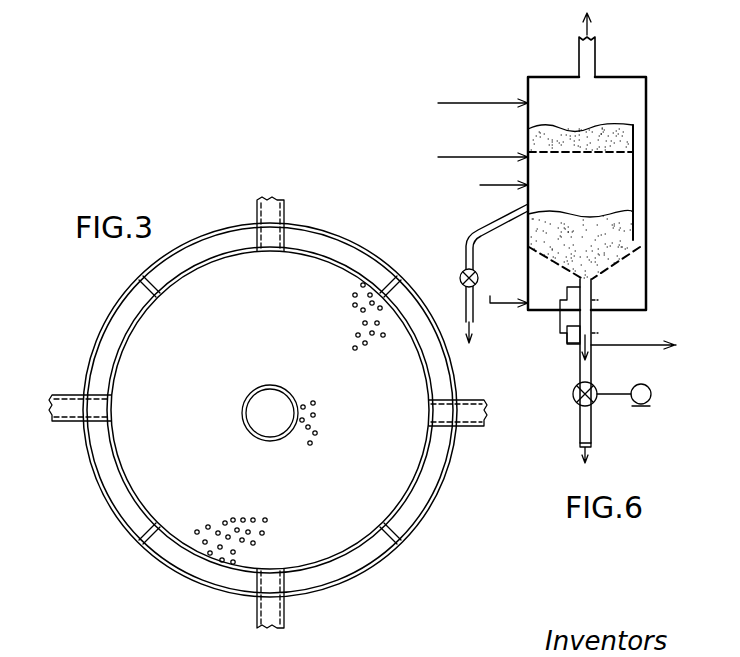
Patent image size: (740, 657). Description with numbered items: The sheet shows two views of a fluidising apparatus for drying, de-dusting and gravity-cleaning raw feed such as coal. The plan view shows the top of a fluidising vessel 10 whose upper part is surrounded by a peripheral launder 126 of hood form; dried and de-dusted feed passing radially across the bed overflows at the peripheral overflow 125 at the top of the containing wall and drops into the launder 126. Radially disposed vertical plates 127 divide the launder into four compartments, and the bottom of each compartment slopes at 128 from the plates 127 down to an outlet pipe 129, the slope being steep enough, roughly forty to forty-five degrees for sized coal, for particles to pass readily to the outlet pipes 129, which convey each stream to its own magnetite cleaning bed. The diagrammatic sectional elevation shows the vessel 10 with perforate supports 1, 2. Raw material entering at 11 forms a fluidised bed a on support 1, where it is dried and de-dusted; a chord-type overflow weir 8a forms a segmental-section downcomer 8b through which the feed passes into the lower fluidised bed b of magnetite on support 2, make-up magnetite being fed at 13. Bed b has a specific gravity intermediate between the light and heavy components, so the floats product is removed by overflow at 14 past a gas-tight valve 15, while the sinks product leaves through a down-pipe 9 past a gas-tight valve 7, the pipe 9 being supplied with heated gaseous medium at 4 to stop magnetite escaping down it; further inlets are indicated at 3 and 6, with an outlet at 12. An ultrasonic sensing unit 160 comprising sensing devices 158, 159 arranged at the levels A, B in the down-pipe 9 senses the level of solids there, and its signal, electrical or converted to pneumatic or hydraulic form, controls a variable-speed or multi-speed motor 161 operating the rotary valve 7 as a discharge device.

In FIG. 3, the perforate support 1 is at (360, 449).
In FIG. 6, the perforate support 1 is at (590, 156).
In FIG. 6, the perforate support 2 is at (623, 256).
In FIG. 6, the inlet 3 is at (509, 290).
In FIG. 6, the heated gaseous medium supply 4 is at (668, 345).
In FIG. 6, the inlet 6 is at (500, 157).
In FIG. 6, the gas-tight valve 7 is at (598, 385).
In FIG. 6, the chord-type overflow weir 8a is at (638, 137).
In FIG. 6, the segmental-section downcomer 8b is at (638, 176).
In FIG. 6, the down-pipe 9 is at (598, 282).
In FIG. 6, the fluidising vessel 10 is at (648, 97).
In FIG. 6, the raw material inlet 11 is at (478, 102).
In FIG. 6, the outlet pipe 12 is at (598, 48).
In FIG. 6, the discrete solid particle feed 13 is at (490, 188).
In FIG. 6, the floats overflow 14 is at (520, 215).
In FIG. 6, the gas-tight valve 15 is at (478, 272).
In FIG. 6, the fluidised bed a is at (571, 128).
In FIG. 6, the fluidised bed b is at (605, 232).
In FIG. 6, the level A is at (603, 334).
In FIG. 6, the level B is at (604, 302).
In FIG. 3, the peripheral overflow 125 is at (341, 263).
In FIG. 3, the peripheral launder 126 is at (318, 236).
In FIG. 3, the radially disposed vertical plates 127 is at (135, 288).
In FIG. 3, the sloping compartment bottom 128 is at (318, 247).
In FIG. 3, the outlet pipe 129 is at (257, 207).
In FIG. 6, the sensing device 158 is at (570, 345).
In FIG. 6, the sensing device 159 is at (578, 292).
In FIG. 6, the ultrasonic sensing unit 160 is at (560, 322).
In FIG. 6, the variable-speed or multi-speed motor 161 is at (641, 406).